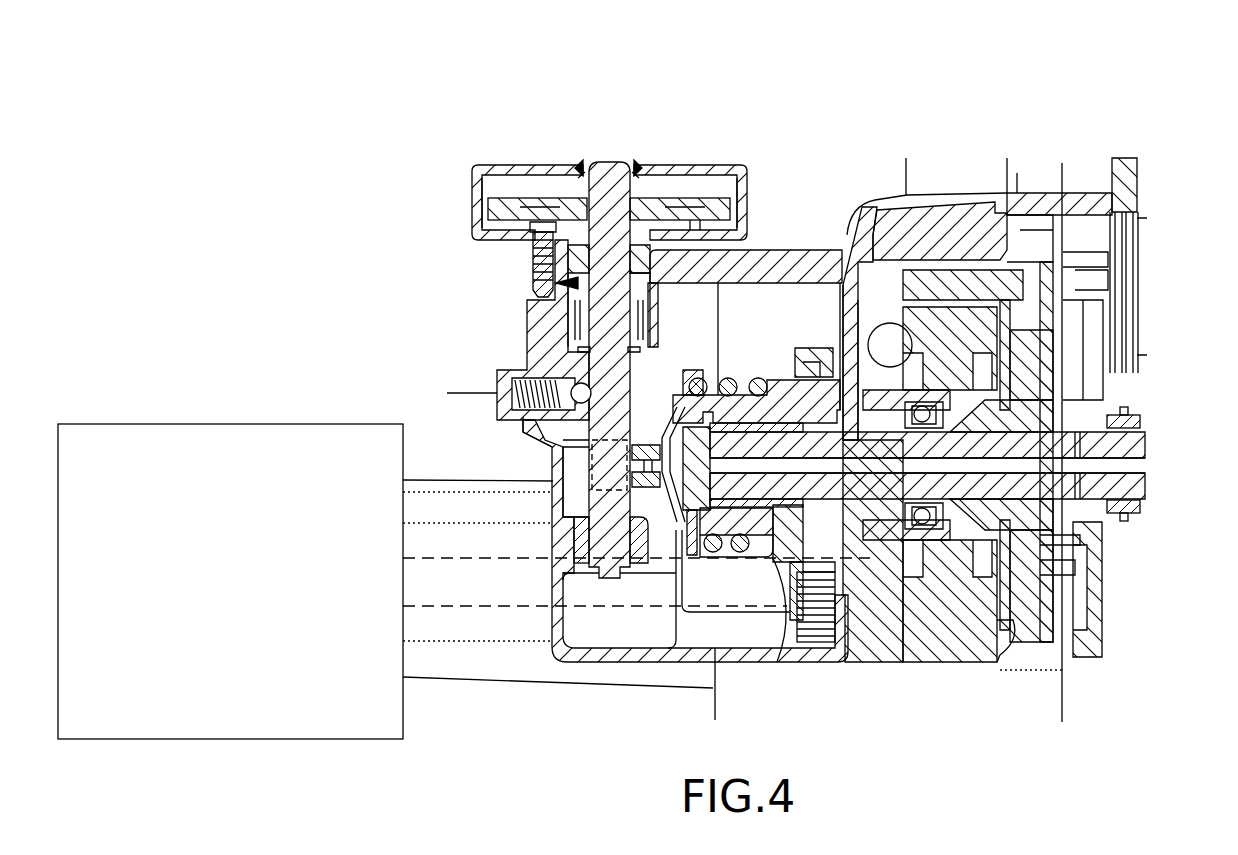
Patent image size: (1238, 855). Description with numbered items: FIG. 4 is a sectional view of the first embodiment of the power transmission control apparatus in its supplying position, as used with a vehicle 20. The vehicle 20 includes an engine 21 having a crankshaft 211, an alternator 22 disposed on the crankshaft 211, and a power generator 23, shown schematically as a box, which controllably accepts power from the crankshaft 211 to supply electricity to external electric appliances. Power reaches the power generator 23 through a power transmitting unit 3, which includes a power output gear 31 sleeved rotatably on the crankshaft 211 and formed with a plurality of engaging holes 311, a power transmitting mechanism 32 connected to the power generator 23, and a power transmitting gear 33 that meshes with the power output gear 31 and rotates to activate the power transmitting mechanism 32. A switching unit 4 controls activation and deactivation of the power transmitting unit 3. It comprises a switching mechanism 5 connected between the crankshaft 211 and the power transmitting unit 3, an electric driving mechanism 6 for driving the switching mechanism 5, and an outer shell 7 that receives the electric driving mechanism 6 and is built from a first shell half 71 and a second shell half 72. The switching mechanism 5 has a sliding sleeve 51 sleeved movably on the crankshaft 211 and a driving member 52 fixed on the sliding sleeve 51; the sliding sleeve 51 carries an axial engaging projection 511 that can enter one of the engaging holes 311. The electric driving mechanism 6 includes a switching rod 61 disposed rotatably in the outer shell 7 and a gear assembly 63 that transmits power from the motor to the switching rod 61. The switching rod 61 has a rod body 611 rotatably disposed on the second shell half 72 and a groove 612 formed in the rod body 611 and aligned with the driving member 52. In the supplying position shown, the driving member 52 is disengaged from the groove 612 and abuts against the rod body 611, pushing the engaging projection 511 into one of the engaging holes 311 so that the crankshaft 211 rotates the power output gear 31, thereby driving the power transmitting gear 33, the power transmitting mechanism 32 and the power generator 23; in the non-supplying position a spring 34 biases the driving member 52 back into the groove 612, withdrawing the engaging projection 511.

The power transmitting unit 3 is at (817, 328).
The switching unit 4 is at (668, 158).
The switching mechanism 5 is at (663, 574).
The electric driving mechanism 6 is at (552, 164).
The outer shell 7 is at (455, 180).
The vehicle 20 is at (1035, 140).
The engine 21 is at (933, 174).
The alternator 22 is at (985, 662).
The power generator 23 is at (236, 424).
The power output gear 31 is at (808, 350).
The power transmitting mechanism 32 is at (740, 615).
The power transmitting gear 33 is at (827, 642).
The spring 34 is at (783, 602).
The sliding sleeve 51 is at (764, 369).
The driving member 52 is at (587, 533).
The switching rod 61 is at (537, 270).
The gear assembly 63 is at (497, 190).
The first shell half 71 is at (748, 170).
The second shell half 72 is at (470, 208).
The crankshaft 211 is at (1133, 413).
The engaging holes 311 is at (860, 360).
The engaging projection 511 is at (813, 363).
The rod body 611 is at (600, 320).
The groove 612 is at (588, 455).